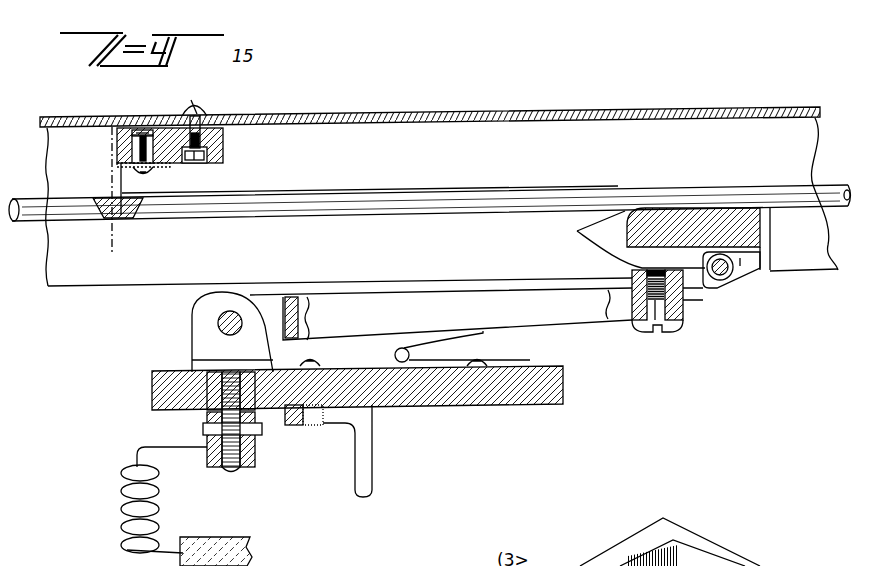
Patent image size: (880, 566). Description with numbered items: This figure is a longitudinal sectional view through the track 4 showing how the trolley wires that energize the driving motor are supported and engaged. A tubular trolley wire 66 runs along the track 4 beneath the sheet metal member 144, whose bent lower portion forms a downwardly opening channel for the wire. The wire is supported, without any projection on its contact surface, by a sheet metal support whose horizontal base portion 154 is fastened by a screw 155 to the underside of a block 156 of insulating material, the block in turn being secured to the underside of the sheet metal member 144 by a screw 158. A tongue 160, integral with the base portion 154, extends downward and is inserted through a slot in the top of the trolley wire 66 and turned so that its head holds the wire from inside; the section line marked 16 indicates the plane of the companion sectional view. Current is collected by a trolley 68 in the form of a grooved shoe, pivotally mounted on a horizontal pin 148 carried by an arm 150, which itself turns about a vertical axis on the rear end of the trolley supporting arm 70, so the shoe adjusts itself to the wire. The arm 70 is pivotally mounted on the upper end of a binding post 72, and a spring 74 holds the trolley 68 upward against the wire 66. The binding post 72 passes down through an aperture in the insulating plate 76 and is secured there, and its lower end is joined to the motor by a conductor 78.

The track 4 is at (668, 108).
The section line 16- 16 is at (106, 136).
The trolley wire 66 is at (398, 199).
The trolley 68 is at (697, 222).
The arm 70 is at (568, 315).
The binding post 72 is at (212, 340).
The spring 74 is at (394, 352).
The plate 76 is at (152, 389).
The conductors 78 is at (120, 509).
The sheet metal member 144 is at (361, 117).
The horizontal pin 148 is at (722, 273).
The arm 150 is at (701, 290).
The base portion 154 is at (162, 166).
The screw 155 is at (154, 101).
The block 156 is at (224, 143).
The screw 158 is at (201, 106).
The tongue 160 is at (118, 184).